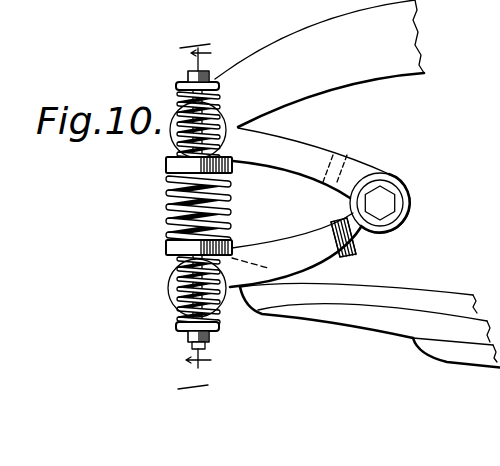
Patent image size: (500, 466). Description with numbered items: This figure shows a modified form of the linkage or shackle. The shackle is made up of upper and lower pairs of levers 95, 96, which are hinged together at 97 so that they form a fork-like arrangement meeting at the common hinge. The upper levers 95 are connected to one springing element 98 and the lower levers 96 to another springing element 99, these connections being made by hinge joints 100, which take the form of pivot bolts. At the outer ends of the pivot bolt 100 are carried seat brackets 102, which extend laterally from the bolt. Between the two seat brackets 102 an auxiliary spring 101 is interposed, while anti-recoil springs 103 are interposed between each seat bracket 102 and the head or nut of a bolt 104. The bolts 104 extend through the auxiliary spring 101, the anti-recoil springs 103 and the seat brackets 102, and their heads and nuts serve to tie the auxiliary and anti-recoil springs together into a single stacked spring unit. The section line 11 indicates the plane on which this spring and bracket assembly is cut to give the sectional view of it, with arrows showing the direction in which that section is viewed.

The section line 11- 11 is at (194, 209).
The upper pair of levers 95 is at (307, 160).
The lower pair of levers 96 is at (315, 251).
The hinge 97 is at (398, 199).
The springing element 98 is at (319, 63).
The springing element 99 is at (402, 321).
The hinge joint / pivot bolt 100 is at (180, 128).
The auxiliary spring 101 is at (172, 200).
The seat bracket 102 is at (232, 170).
The anti-recoil spring 103 is at (217, 122).
The bolt 104 is at (192, 344).